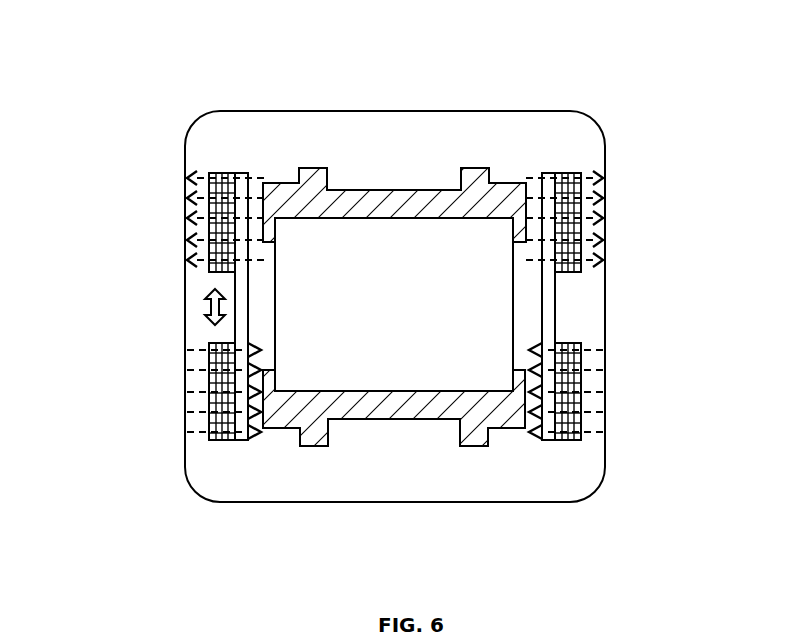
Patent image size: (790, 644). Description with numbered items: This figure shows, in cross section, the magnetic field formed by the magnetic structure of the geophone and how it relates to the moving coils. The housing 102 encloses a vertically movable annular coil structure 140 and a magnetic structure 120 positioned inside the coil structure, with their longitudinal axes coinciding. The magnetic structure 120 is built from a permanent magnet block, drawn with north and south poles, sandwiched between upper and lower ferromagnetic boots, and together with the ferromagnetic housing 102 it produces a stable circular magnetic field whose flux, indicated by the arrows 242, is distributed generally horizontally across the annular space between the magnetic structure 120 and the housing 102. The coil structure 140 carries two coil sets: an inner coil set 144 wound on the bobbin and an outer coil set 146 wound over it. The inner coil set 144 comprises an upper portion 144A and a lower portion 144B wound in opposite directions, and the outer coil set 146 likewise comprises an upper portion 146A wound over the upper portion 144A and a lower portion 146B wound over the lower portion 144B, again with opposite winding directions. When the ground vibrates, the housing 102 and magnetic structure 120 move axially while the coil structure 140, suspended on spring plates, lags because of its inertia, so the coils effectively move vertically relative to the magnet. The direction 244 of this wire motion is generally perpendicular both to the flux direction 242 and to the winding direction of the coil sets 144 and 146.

The housing 102 is at (311, 111).
The magnetic structure 120 is at (392, 190).
The annular coil structure 140 is at (222, 160).
The inner coil set 144 is at (558, 273).
The upper portion of inner coil set 144A is at (219, 171).
The lower portion of inner coil set 144B is at (218, 442).
The outer coil set 146 is at (578, 272).
The upper portion of outer coil set 146A is at (228, 171).
The lower portion of outer coil set 146B is at (227, 442).
The magnetic flux direction 242 is at (200, 176).
The direction of wire movement 244 is at (207, 307).